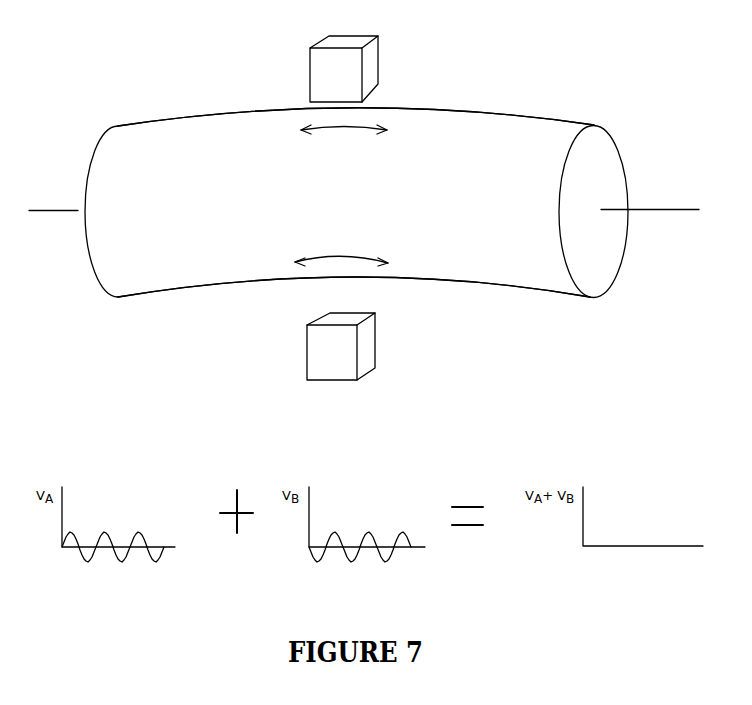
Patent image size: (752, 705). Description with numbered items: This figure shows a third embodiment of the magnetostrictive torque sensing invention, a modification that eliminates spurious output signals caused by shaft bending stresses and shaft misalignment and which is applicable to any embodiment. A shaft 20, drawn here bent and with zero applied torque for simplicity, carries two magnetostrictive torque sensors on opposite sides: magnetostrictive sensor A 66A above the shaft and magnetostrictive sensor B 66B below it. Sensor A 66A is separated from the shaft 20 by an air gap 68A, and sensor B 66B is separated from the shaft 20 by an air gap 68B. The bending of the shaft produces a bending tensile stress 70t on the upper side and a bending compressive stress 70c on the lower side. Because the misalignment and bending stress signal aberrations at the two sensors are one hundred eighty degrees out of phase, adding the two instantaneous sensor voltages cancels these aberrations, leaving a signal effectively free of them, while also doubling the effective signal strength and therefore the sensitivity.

The shaft 20 is at (491, 110).
The magnetostrictive sensor A 66A is at (378, 55).
The magnetostrictive sensor B 66B is at (376, 372).
The air gap between sensor A and shaft 68A is at (373, 101).
The air gap between sensor B and shaft 68B is at (367, 295).
The bending tensile stress 70t is at (347, 127).
The bending compressive stress 70c is at (347, 257).